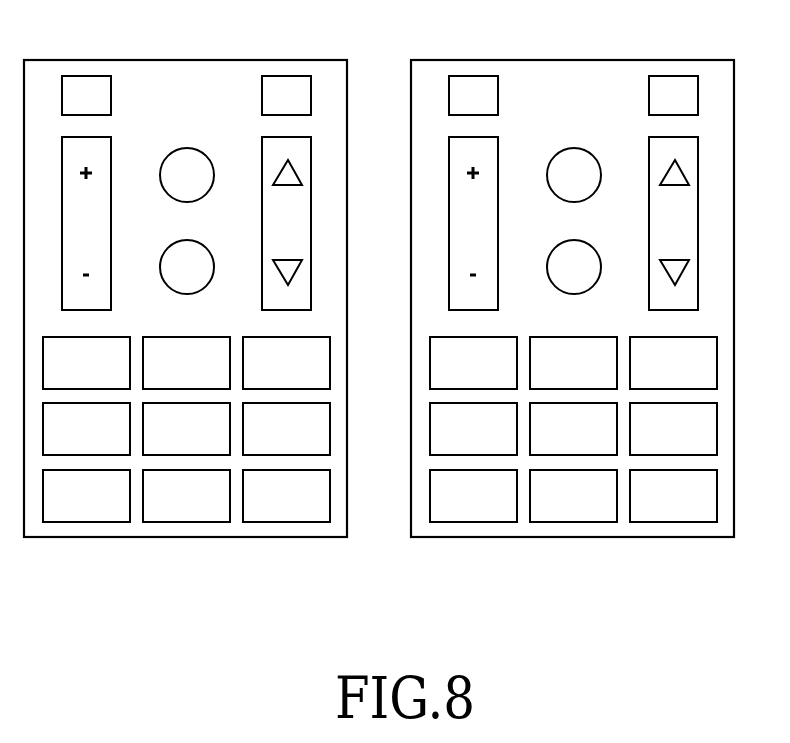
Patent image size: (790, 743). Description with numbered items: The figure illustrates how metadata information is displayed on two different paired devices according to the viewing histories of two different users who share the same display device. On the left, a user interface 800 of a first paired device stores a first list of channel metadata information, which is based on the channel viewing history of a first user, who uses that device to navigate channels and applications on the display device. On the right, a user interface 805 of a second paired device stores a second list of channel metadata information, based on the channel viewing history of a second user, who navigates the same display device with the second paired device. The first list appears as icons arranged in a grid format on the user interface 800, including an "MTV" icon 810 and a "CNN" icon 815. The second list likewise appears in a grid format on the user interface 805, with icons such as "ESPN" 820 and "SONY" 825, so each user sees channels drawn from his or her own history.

The user interface 800 is at (185, 277).
The user interface 805 is at (572, 277).
The "MTV" icon 810 is at (105, 336).
The "CNN" icon 815 is at (205, 336).
The "ESPN" icon 820 is at (492, 336).
The "SONY" icon 825 is at (592, 336).